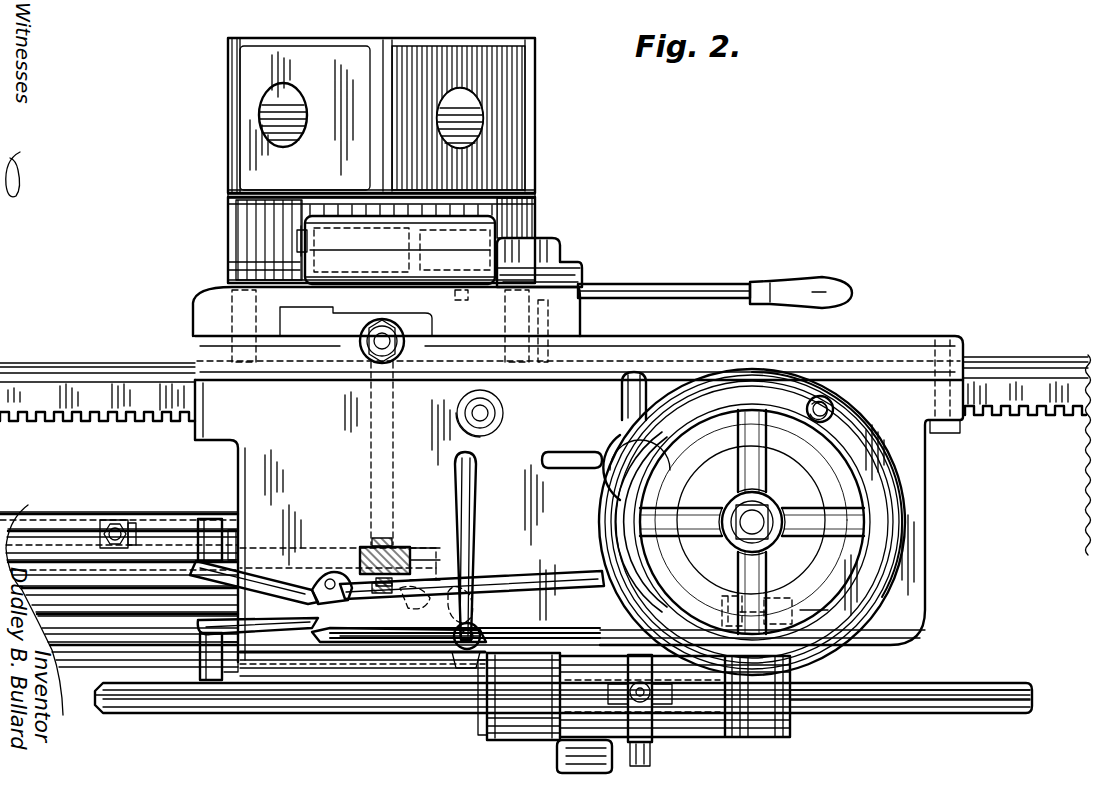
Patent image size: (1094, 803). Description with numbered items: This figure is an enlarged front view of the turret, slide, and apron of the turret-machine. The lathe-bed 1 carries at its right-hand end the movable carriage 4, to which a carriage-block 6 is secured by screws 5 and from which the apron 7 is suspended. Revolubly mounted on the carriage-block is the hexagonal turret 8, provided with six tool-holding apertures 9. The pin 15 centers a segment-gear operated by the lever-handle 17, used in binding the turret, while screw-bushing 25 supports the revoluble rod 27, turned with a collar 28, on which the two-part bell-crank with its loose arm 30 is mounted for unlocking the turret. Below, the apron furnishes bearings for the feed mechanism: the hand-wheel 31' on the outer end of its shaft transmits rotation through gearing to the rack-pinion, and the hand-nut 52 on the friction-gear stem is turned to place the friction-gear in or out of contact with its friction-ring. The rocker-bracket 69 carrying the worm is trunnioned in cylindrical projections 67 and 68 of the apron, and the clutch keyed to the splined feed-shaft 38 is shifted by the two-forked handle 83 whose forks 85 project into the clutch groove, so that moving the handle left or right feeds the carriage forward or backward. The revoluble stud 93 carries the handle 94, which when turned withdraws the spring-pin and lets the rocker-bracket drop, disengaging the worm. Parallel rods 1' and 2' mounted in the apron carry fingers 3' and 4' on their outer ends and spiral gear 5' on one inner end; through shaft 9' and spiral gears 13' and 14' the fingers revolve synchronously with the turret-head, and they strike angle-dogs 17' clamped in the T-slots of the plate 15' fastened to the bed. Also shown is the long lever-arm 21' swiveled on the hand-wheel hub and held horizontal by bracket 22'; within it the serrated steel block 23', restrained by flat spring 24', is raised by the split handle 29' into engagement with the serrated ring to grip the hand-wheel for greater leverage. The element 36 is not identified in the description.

The lathe-bed 1 is at (1027, 455).
The parallel rod 1' is at (340, 543).
The parallel rod 2' is at (258, 618).
The finger 3' is at (203, 523).
The carriage 4 is at (579, 363).
The finger 4' is at (188, 656).
The screw 5 is at (367, 325).
The spiral gear 5' is at (399, 564).
The carriage-block 6 is at (228, 229).
The apron 7 is at (916, 500).
The hexagonal turret 8 is at (536, 130).
The tool-holding aperture 9 is at (407, 106).
The shaft 9' is at (393, 453).
The spiral gear 13' is at (361, 562).
The spiral gear 14' is at (392, 640).
The pin 15 is at (539, 249).
The plate 15' is at (119, 574).
The lever-handle 17 is at (716, 280).
The angle-dog 17' is at (118, 515).
The lever-arm 21' is at (472, 571).
The bracket 22' is at (332, 591).
The steel block 23' is at (738, 597).
The flat spring 24' is at (796, 610).
The screw-bushing 25 is at (304, 230).
The revoluble rod 27 is at (297, 249).
The collar 28 is at (390, 262).
The split handle 29' is at (254, 575).
The bell-crank arm 30 is at (455, 295).
The hand-wheel 31' is at (752, 522).
The rack 36 is at (95, 422).
The splined feed-shaft 38 is at (316, 714).
The hand-nut 52 is at (622, 395).
The cylindrical projection 67 is at (487, 738).
The cylindrical projection 68 is at (790, 732).
The rocker-bracket 69 is at (690, 740).
The two-forked handle 83 is at (626, 688).
The fork 85 is at (650, 744).
The revoluble stud 93 is at (472, 624).
The handle 94 is at (476, 470).